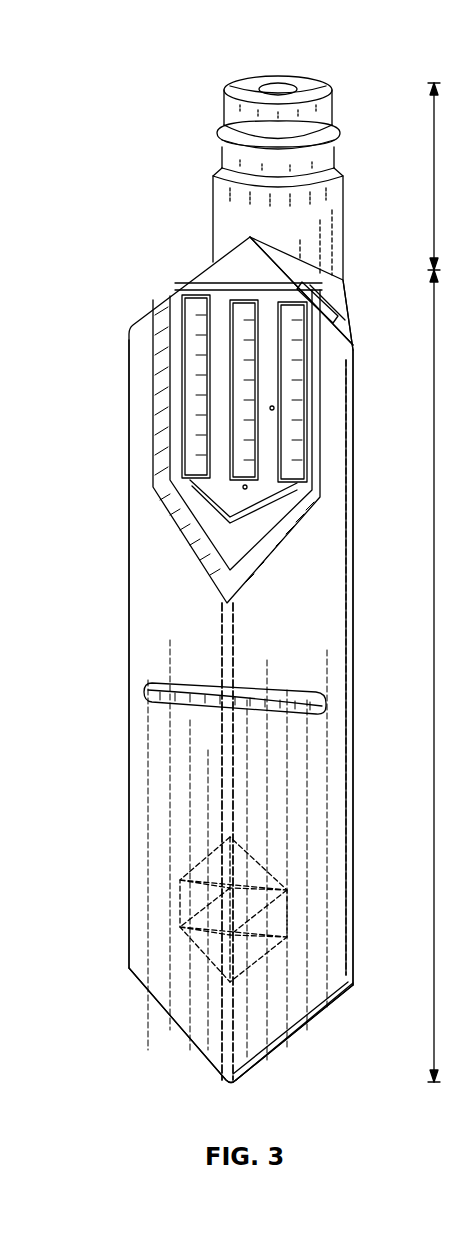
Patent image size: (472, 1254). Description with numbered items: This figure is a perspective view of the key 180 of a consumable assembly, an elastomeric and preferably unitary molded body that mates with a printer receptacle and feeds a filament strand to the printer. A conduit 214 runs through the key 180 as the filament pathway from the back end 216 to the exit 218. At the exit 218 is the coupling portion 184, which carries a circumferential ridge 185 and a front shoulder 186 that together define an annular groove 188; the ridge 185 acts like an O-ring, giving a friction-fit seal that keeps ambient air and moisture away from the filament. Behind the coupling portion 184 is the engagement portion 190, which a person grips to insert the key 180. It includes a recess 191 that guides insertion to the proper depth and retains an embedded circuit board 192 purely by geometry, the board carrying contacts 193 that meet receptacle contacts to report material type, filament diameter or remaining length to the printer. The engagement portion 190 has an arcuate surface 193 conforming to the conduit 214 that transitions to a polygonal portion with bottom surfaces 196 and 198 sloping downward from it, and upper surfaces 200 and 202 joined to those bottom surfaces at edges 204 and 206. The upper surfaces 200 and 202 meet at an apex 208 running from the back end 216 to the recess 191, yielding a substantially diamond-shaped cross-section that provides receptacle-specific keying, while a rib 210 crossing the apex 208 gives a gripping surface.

The key 180 is at (112, 603).
The coupling portion 184 is at (434, 168).
The ridge 185 is at (216, 128).
The front shoulder 186 is at (222, 171).
The annular groove 188 is at (222, 141).
The engagement portion 190 is at (434, 585).
The recess 191 is at (203, 517).
The circuit board 192 is at (190, 348).
The contacts 193 is at (288, 310).
The bottom surface 196 is at (141, 318).
The bottom surface 198 is at (350, 309).
The upper surface 200 is at (147, 788).
The upper surface 202 is at (320, 880).
The edge 204 is at (129, 752).
The edge 206 is at (353, 797).
The apex 208 is at (227, 747).
The rib 210 is at (146, 688).
The conduit 214 is at (272, 86).
The back end 216 is at (176, 1030).
The exit 218 is at (314, 80).